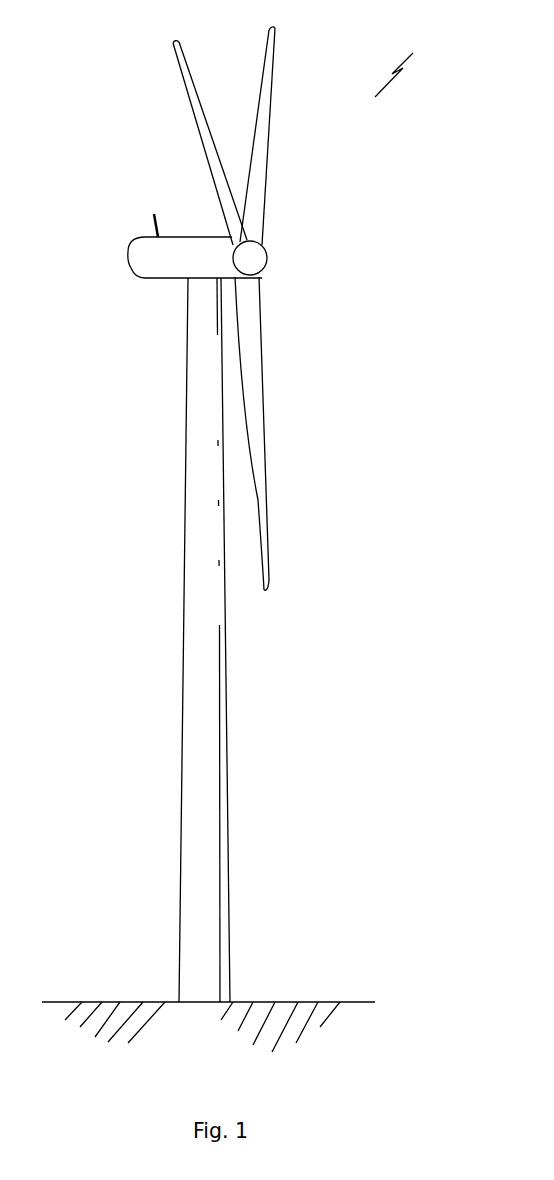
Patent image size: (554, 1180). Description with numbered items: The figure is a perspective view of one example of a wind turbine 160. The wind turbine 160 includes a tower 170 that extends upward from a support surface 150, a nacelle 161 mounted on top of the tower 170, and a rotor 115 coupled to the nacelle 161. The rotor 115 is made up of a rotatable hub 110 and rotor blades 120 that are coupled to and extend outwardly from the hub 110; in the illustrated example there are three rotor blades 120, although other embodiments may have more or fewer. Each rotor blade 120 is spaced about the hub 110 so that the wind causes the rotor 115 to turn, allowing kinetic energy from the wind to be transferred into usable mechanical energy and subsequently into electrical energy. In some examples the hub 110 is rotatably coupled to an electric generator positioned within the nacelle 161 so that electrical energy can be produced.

The rotatable hub 110 is at (268, 264).
The rotor 115 is at (271, 301).
The rotor blade 120 is at (262, 65).
The support surface 150 is at (118, 1002).
The wind turbine 160 is at (424, 67).
The nacelle 161 is at (165, 280).
The tower 170 is at (186, 741).